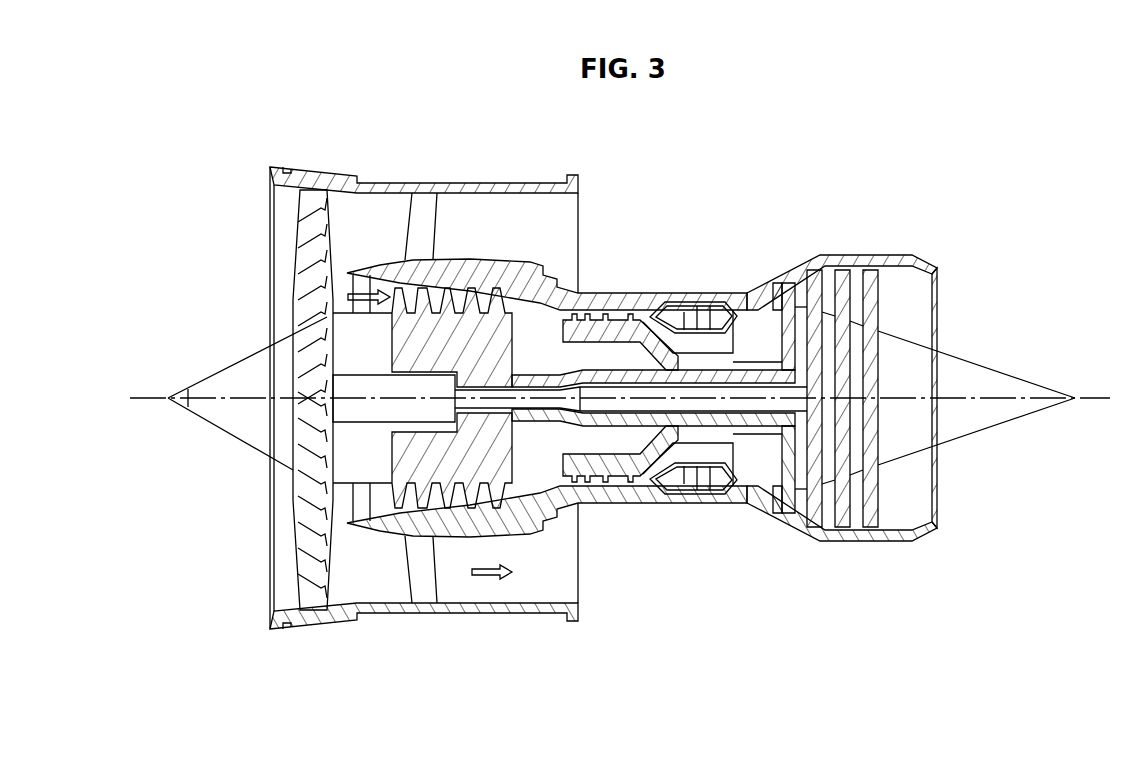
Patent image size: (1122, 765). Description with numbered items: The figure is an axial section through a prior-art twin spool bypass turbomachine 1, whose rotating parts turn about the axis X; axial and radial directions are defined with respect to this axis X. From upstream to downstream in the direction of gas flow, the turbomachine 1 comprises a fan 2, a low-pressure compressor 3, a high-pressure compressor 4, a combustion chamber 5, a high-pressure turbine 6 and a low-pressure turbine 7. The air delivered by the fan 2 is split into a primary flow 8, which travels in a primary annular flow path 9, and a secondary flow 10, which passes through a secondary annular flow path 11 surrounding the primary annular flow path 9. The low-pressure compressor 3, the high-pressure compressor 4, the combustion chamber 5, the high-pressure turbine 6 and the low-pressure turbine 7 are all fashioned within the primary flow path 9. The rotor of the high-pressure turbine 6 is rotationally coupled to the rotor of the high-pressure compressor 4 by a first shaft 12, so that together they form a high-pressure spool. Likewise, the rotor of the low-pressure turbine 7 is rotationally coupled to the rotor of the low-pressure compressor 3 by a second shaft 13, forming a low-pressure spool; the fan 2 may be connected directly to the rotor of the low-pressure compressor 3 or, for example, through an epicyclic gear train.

The twin spool bypass turbomachine 1 is at (947, 226).
The fan 2 is at (300, 262).
The low-pressure compressor 3 is at (470, 289).
The high-pressure compressor 4 is at (607, 326).
The combustion chamber 5 is at (707, 308).
The high-pressure turbine 6 is at (742, 308).
The low-pressure turbine 7 is at (838, 272).
The primary flow 8 is at (362, 298).
The primary annular flow path 9 is at (380, 508).
The secondary flow 10 is at (485, 577).
The secondary annular flow path 11 is at (532, 563).
The first shaft 12 is at (693, 441).
The second shaft 13 is at (590, 425).
The axis of the turbomachine X is at (1090, 395).